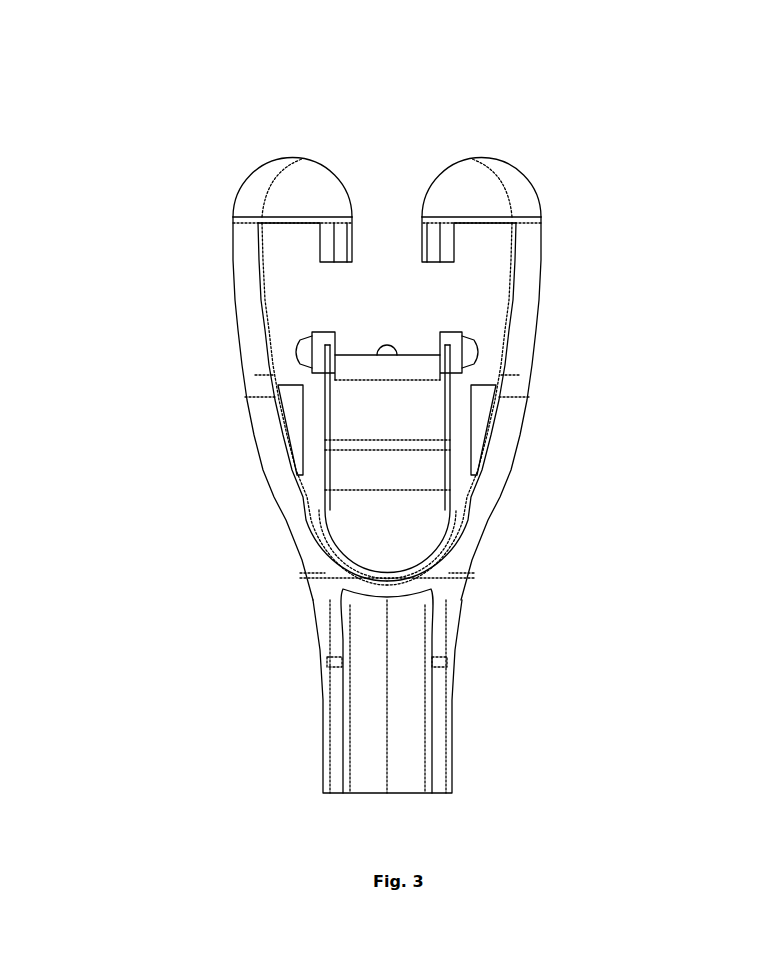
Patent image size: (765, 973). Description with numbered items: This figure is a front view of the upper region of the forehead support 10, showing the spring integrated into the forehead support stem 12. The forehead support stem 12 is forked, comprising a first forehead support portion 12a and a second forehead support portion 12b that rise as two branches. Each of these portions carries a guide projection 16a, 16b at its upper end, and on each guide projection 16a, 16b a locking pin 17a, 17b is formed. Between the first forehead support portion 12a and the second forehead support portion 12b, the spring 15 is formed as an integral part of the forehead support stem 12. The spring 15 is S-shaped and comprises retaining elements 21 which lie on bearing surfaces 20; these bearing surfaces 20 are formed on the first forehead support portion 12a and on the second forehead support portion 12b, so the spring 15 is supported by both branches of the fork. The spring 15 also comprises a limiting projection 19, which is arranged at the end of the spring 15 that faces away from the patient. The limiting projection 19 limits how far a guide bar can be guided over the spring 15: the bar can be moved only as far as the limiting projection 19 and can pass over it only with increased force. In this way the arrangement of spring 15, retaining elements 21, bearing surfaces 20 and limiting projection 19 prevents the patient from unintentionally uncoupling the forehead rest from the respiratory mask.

The forehead support 10 is at (478, 642).
The forehead support stem 12 is at (280, 577).
The first forehead support portion 12a is at (272, 457).
The second forehead support portion 12b is at (500, 448).
The spring 15 is at (392, 425).
The guide projection 16a is at (290, 173).
The guide projection 16b is at (480, 193).
The locking pin 17a is at (351, 205).
The locking pin 17b is at (427, 205).
The limiting projection 19 is at (392, 352).
The bearing surfaces 20 is at (290, 395).
The retaining elements 21 is at (293, 352).